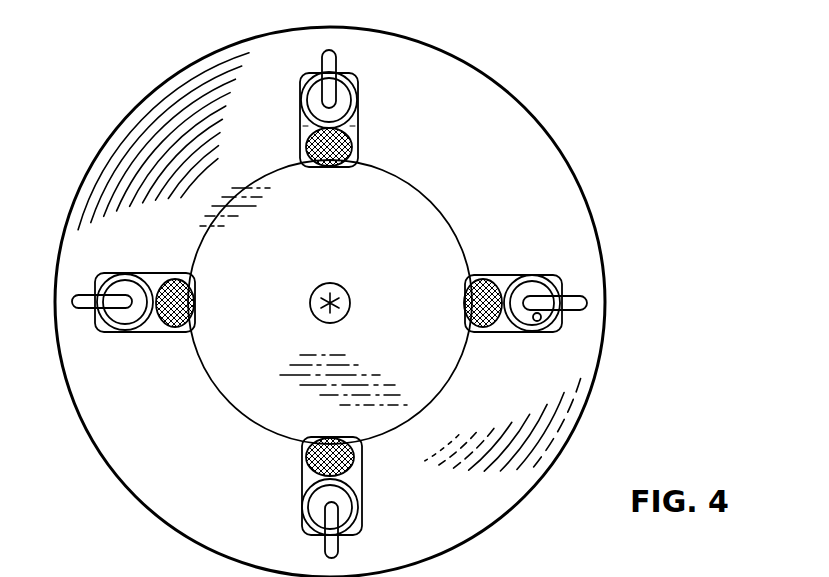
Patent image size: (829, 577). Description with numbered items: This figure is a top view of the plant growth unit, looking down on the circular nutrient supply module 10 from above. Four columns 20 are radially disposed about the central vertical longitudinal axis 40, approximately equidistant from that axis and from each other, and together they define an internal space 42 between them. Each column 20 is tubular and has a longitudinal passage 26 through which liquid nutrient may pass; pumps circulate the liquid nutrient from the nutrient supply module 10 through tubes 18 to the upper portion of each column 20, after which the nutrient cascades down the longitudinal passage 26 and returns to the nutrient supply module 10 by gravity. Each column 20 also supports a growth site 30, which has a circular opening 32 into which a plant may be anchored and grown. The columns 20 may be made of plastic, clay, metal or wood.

The nutrient supply module 10 is at (552, 126).
The tube 18 is at (310, 99).
The column 20 is at (364, 304).
The longitudinal passage 26 is at (536, 322).
The growth site 30 is at (502, 275).
The circular opening 32 is at (466, 313).
The central vertical longitudinal axis 40 is at (330, 280).
The internal space 42 is at (410, 233).